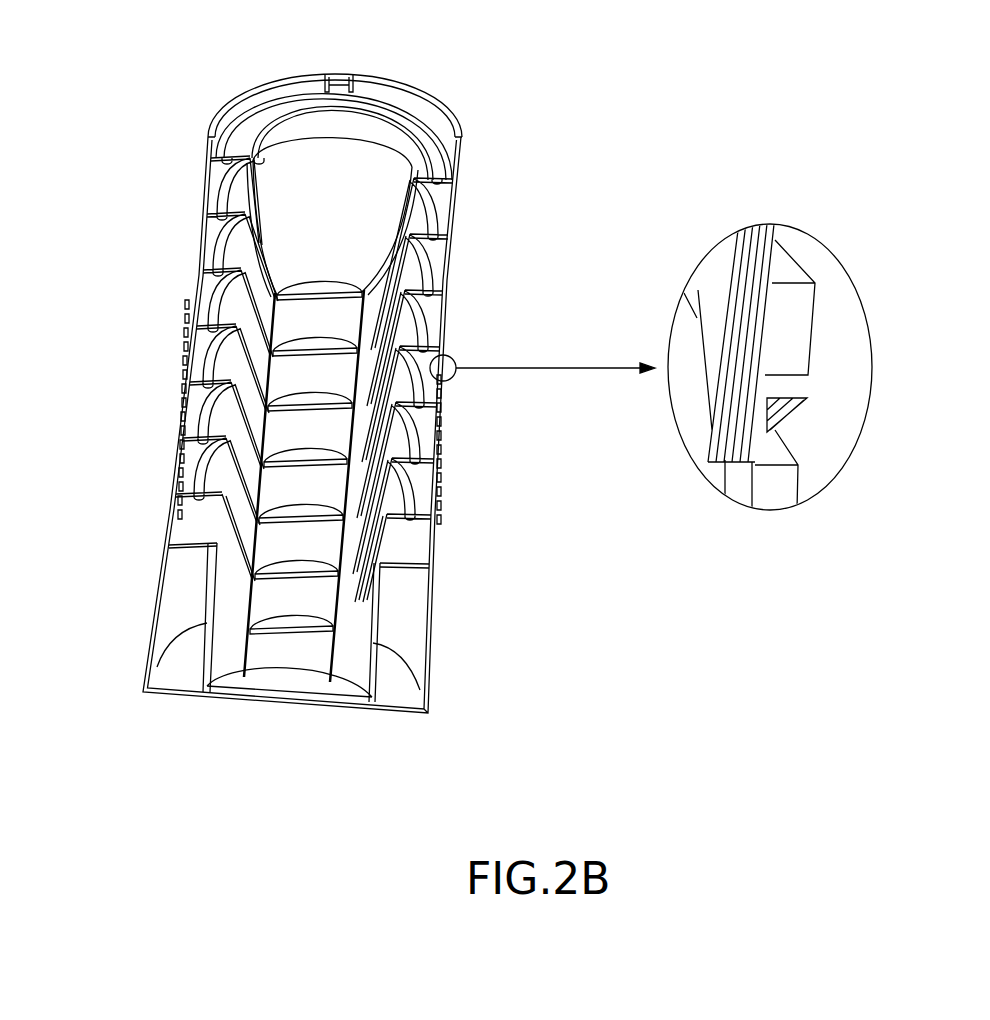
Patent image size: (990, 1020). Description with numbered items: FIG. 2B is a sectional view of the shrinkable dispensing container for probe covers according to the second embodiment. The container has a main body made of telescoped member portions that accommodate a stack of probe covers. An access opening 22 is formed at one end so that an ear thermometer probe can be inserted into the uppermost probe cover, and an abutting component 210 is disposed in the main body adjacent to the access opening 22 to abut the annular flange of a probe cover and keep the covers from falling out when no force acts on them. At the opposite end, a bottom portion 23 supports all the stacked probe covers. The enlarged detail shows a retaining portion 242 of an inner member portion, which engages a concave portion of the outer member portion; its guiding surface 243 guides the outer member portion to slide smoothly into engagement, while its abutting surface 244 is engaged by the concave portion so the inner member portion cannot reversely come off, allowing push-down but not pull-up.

The access opening 22 is at (402, 77).
The abutting component 210 is at (342, 75).
The bottom portion 23 is at (183, 660).
The retaining portion 242 is at (773, 423).
The guiding surface 243 is at (775, 432).
The abutting surface 244 is at (780, 367).